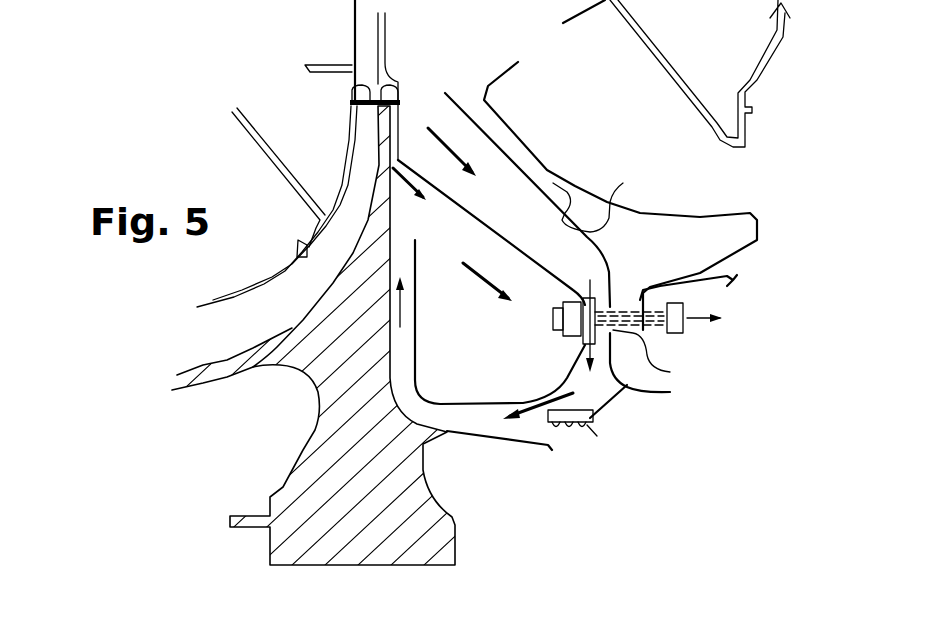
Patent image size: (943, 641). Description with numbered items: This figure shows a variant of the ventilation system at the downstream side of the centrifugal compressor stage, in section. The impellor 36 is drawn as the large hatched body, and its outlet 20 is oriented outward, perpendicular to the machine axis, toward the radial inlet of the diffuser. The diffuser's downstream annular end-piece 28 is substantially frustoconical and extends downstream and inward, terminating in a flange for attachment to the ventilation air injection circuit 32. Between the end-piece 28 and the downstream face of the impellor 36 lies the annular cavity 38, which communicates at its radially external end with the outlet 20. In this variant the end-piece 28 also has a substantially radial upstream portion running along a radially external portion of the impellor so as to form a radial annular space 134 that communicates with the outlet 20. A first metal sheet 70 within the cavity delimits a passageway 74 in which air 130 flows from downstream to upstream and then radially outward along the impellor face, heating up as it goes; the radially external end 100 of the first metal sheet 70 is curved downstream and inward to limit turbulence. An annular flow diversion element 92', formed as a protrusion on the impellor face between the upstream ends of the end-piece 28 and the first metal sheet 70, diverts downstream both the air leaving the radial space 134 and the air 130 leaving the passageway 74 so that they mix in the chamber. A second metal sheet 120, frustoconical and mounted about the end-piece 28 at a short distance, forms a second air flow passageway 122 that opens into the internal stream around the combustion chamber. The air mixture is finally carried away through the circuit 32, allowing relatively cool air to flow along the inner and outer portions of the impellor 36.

The outlet 20 is at (370, 100).
The radial annular space 134 is at (393, 145).
The second air flow passageway 122 is at (557, 187).
The second metal sheet 120 is at (607, 207).
The annular flow diversion element 92' is at (434, 180).
The downstream annular end-piece 28 is at (512, 263).
The radially external end 100 is at (454, 293).
The air 130 is at (403, 307).
The annular cavity 38 is at (609, 326).
The passageway 74 is at (403, 352).
The first metal sheet 70 is at (495, 385).
The impellor 36 is at (322, 387).
The ventilation air injection circuit 32 is at (700, 410).